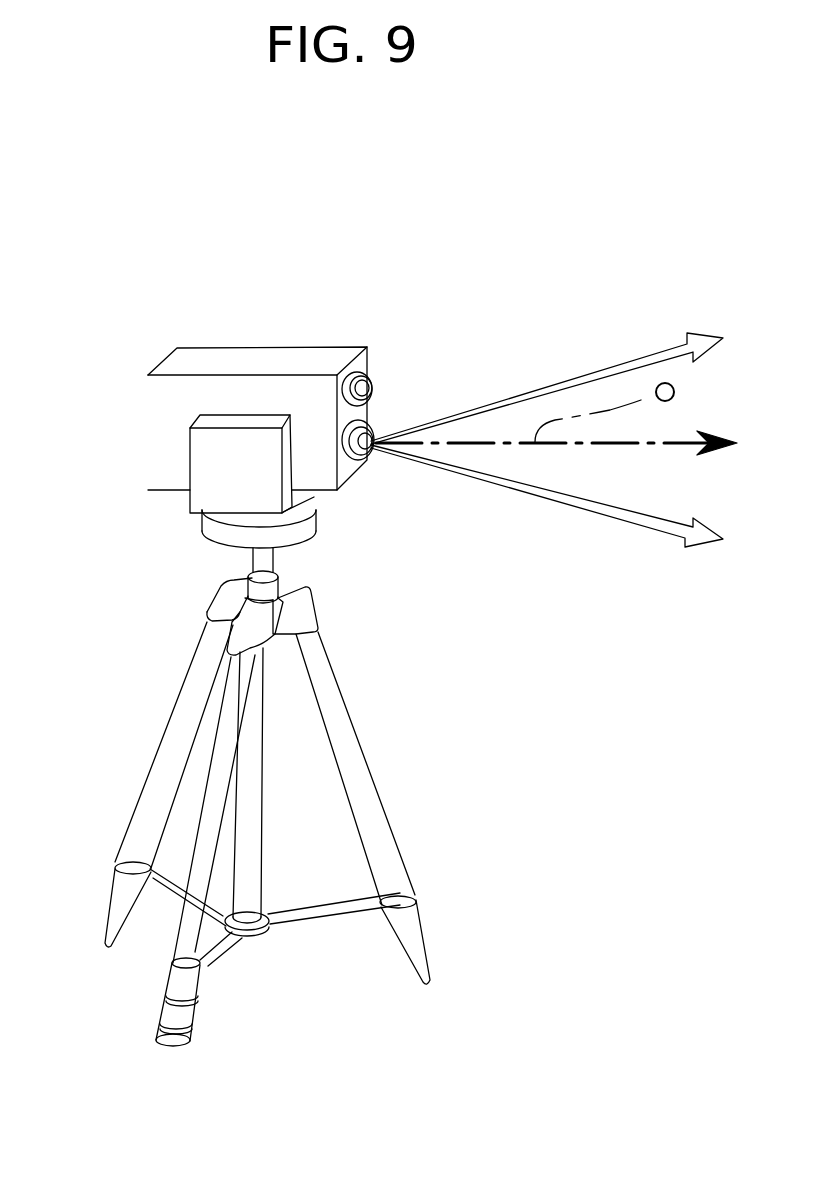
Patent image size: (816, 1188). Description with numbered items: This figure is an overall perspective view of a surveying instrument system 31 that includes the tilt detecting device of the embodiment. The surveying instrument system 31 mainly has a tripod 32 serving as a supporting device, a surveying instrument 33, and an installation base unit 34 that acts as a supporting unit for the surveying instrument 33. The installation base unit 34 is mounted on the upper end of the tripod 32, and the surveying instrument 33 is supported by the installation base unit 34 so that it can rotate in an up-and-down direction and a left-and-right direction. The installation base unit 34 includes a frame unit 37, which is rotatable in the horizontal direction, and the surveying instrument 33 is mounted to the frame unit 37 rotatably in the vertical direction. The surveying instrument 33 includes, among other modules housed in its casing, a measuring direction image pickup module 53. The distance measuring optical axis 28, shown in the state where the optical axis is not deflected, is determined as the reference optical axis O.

The surveying instrument system 31 is at (314, 184).
The tripod 32 is at (153, 757).
The surveying instrument 33 is at (202, 348).
The installation base unit 34 is at (208, 540).
The frame unit 37 is at (190, 462).
The measuring direction image pickup module 53 is at (375, 388).
The distance measuring optical axis 28 is at (540, 388).